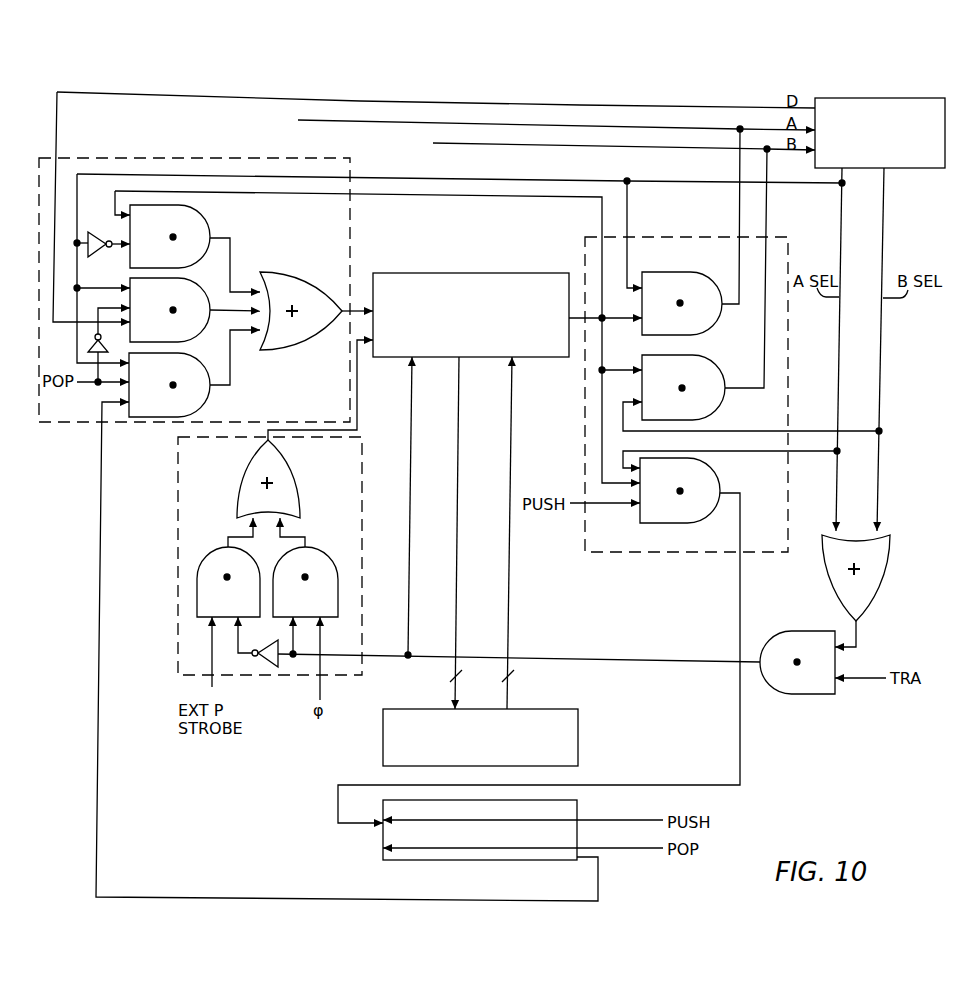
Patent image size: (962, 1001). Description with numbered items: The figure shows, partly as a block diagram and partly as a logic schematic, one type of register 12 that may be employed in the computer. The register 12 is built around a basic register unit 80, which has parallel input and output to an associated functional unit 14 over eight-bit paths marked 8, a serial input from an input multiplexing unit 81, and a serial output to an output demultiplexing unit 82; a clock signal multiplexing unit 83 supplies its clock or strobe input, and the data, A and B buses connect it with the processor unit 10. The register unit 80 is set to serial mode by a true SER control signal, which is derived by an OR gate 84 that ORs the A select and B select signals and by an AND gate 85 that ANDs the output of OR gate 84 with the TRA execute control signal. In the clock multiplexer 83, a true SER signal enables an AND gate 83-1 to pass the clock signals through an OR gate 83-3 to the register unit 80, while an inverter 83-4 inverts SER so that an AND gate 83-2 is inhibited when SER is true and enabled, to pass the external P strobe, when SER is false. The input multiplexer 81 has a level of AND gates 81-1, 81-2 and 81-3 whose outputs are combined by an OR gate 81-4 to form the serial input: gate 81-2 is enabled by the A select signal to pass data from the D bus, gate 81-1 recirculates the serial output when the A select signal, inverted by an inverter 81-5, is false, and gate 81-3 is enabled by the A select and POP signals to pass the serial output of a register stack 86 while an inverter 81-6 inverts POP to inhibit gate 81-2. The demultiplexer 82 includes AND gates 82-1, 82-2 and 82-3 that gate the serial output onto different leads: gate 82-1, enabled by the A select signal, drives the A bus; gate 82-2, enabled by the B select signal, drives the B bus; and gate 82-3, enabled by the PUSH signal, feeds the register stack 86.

The processor unit 10 is at (884, 100).
The register 12 is at (778, 767).
The functional unit 14 is at (497, 758).
The register unit 80 is at (445, 277).
The input multiplexing unit 81 is at (247, 160).
The AND gate 81-1 is at (211, 227).
The AND gate 81-2 is at (211, 296).
The AND gate 81-3 is at (211, 372).
The OR gate 81-4 is at (317, 275).
The inverter 81-5 is at (97, 231).
The inverter 81-6 is at (90, 338).
The output demultiplexing unit 82 is at (727, 235).
The AND gate 82-1 is at (670, 273).
The AND gate 82-2 is at (743, 356).
The AND gate 82-3 is at (743, 478).
The clock signal multiplexing unit 83 is at (178, 650).
The AND gate 83-1 is at (325, 550).
The AND gate 83-2 is at (205, 550).
The OR gate 83-3 is at (290, 455).
The inverter 83-4 is at (262, 668).
The OR gate 84 is at (891, 562).
The AND gate 85 is at (815, 694).
The register stack 86 is at (393, 860).
The bus width indication 8 is at (479, 679).